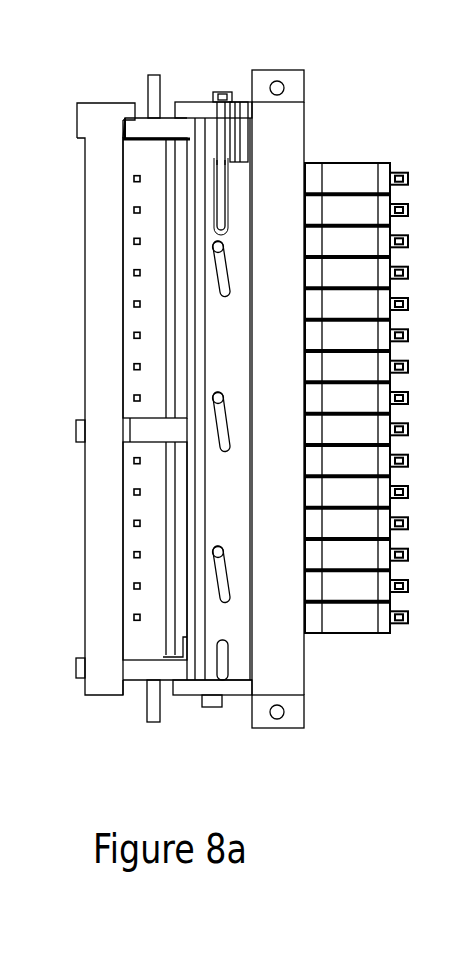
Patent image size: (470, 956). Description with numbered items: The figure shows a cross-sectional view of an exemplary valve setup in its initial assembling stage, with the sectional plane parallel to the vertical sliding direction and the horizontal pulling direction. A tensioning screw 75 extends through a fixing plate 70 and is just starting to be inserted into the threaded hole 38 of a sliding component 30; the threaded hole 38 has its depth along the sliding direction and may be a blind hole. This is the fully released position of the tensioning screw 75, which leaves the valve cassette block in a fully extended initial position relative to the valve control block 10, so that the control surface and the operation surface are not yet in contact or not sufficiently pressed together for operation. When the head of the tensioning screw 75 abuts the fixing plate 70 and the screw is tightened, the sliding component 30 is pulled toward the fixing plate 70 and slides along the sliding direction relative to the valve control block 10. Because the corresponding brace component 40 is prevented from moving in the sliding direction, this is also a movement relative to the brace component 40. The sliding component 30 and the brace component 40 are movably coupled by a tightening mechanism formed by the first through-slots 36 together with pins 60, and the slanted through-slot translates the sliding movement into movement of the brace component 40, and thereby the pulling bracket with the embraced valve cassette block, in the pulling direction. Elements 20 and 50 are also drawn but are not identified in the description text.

The valve control block 10 is at (298, 122).
The connector body with contacts 20 is at (133, 540).
The sliding component 30 is at (244, 505).
The first through-slots 36 is at (228, 442).
The threaded hole 38 is at (225, 213).
The brace component 40 is at (143, 119).
The outer shell 50 is at (102, 492).
The pins 60 is at (223, 400).
The fixing plate 70 is at (187, 108).
The tensioning screw 75 is at (220, 95).